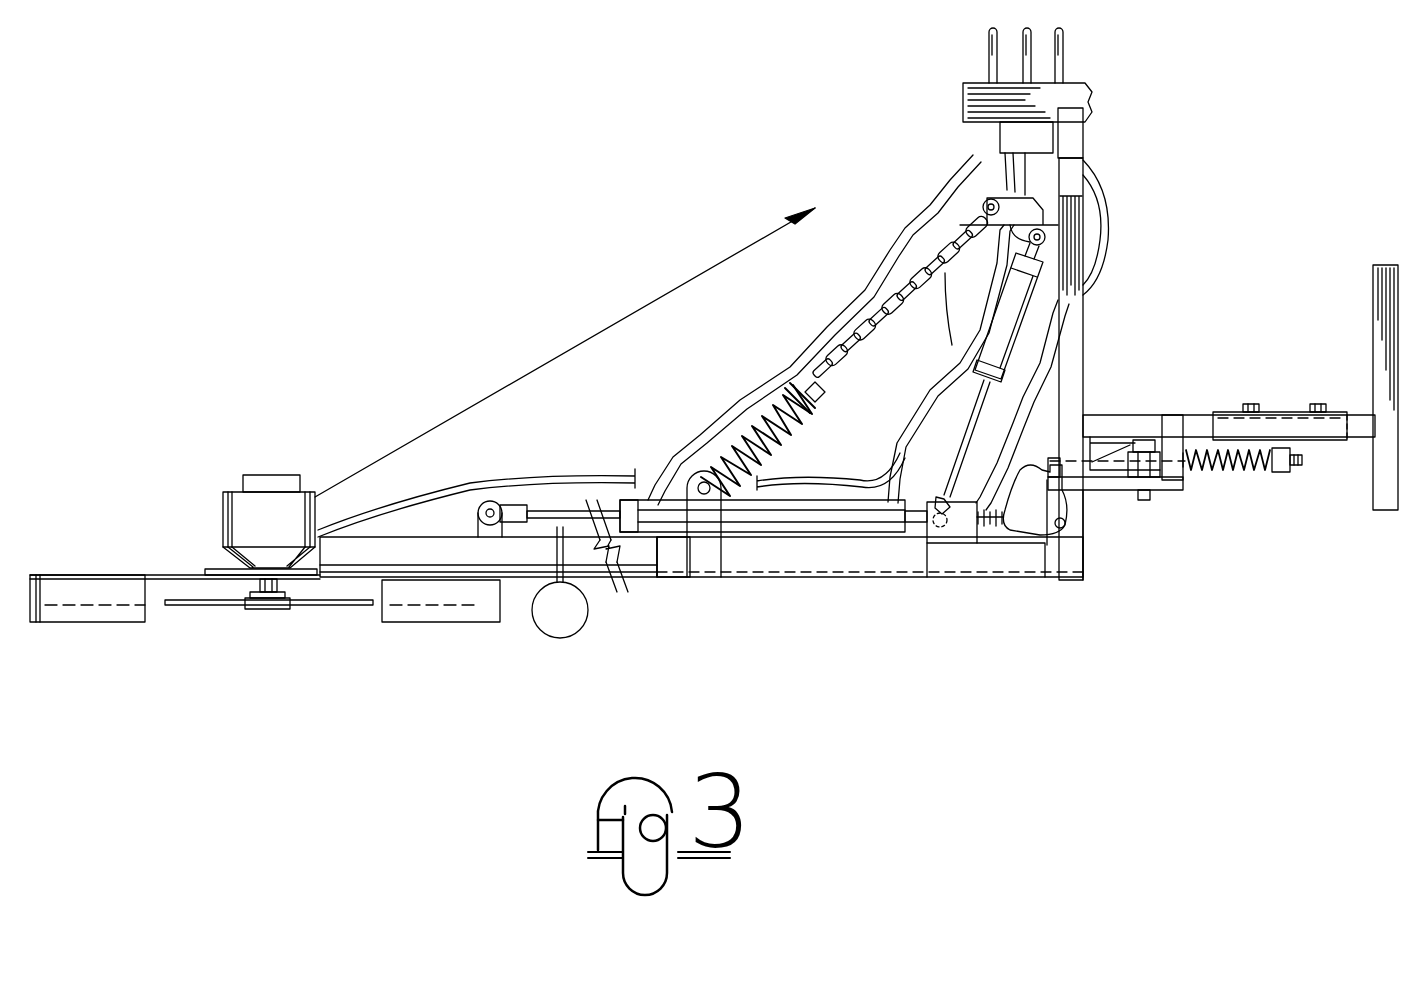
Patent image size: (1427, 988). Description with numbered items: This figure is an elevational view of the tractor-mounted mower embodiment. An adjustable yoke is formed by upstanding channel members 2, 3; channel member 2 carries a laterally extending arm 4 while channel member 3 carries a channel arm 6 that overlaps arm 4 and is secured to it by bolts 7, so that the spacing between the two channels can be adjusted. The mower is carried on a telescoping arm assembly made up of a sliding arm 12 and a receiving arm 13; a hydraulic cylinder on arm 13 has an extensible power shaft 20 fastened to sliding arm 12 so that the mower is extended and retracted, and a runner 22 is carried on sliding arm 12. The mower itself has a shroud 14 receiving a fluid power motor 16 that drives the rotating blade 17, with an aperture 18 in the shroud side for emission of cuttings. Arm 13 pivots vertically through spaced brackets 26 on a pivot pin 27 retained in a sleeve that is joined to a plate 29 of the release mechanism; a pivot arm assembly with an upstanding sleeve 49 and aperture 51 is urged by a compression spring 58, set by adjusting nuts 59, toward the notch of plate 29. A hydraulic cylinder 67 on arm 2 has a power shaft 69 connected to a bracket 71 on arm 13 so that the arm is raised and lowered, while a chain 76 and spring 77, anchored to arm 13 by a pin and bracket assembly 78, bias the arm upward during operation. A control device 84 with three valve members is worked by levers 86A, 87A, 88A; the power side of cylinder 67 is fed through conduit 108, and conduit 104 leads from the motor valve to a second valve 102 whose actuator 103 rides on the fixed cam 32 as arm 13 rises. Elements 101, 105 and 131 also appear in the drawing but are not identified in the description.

The channel member 2 is at (1072, 398).
The channel member 3 is at (1398, 418).
The laterally extending arm 4 is at (1155, 415).
The channel arm 6 is at (1355, 412).
The bolts 7 is at (1317, 404).
The sliding arm 12 is at (633, 560).
The receiving arm 13 is at (1028, 214).
The shroud 14 is at (420, 606).
The fluid power motor 16 is at (278, 532).
The rotating blade 17 is at (322, 606).
The aperture 18 is at (348, 606).
The extensible power shaft 20 is at (598, 505).
The runner 22 is at (570, 612).
The brackets 26 is at (1072, 540).
The pivot pin 27 is at (1067, 520).
The plate 29 is at (1130, 490).
The cam 32 is at (1035, 500).
The upstanding sleeve 49 is at (1160, 468).
The aperture 51 is at (1150, 495).
The compression spring 58 is at (1263, 465).
The adjusting nuts 59 is at (1280, 470).
The hydraulic cylinder 67 is at (1015, 340).
The power shaft 69 is at (978, 408).
The bracket 71 is at (935, 530).
The chain 76 is at (965, 240).
The spring 77 is at (818, 403).
The pin and bracket assembly 78 is at (720, 574).
The control device 84 is at (1090, 112).
The lever 86A is at (985, 45).
The lever 87A is at (1032, 60).
The lever 88A is at (1064, 70).
The hose 101 is at (868, 478).
The second valve 102 is at (962, 540).
The actuator 103 is at (985, 510).
The conduit 104 is at (1135, 210).
The direction line 105 is at (505, 386).
The conduit 108 is at (955, 332).
The frame beam 131 is at (845, 555).